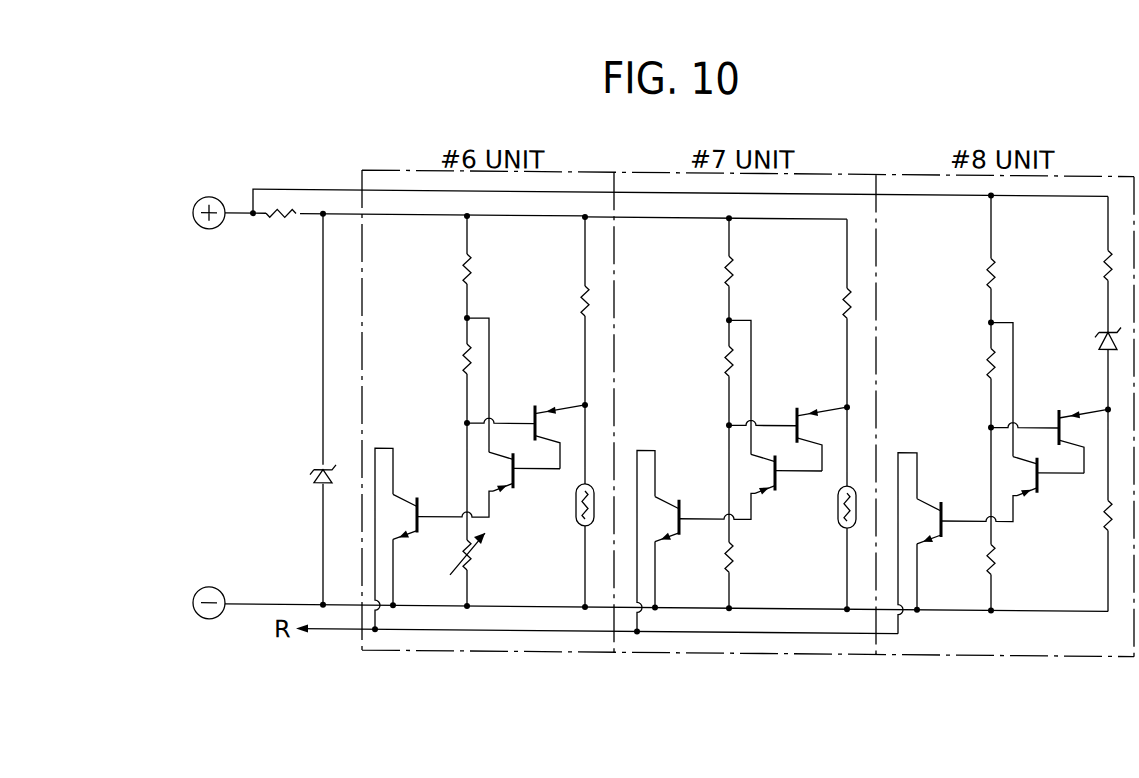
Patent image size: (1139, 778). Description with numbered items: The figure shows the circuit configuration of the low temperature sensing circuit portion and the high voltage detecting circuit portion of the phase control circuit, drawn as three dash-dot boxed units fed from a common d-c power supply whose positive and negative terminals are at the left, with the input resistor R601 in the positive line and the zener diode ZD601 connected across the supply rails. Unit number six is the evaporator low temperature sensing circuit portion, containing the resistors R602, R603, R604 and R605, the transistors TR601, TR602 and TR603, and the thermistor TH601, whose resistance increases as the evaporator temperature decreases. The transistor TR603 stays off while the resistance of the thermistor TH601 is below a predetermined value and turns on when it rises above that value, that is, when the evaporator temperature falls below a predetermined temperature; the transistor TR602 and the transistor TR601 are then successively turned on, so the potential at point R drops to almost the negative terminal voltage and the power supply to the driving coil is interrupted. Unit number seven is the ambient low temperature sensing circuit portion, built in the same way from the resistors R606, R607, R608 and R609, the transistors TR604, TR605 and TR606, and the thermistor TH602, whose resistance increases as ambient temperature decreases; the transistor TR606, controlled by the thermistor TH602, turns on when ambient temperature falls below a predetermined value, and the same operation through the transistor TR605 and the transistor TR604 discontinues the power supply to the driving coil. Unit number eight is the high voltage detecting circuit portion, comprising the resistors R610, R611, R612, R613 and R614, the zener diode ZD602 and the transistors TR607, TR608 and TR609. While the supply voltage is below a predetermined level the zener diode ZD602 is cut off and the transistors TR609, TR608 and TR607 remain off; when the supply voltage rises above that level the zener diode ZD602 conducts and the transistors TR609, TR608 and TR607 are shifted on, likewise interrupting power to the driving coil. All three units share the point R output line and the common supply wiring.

The resistor R601 is at (284, 221).
The zener diode ZD601 is at (315, 470).
The resistor R602 is at (462, 268).
The resistor R603 is at (462, 358).
The resistor R604 is at (473, 558).
The resistor R605 is at (582, 297).
The transistor TR601 is at (403, 499).
The transistor TR602 is at (492, 490).
The transistor TR603 is at (557, 391).
The thermistor TH601 is at (577, 519).
The resistor R606 is at (724, 266).
The resistor R607 is at (724, 356).
The resistor R608 is at (737, 554).
The resistor R609 is at (843, 297).
The transistor TR604 is at (667, 497).
The transistor TR605 is at (757, 487).
The transistor TR606 is at (817, 389).
The thermistor TH602 is at (840, 523).
The resistor R610 is at (986, 264).
The resistor R611 is at (986, 354).
The resistor R612 is at (1001, 546).
The resistor R613 is at (1105, 263).
The resistor R614 is at (1100, 499).
The zener diode ZD602 is at (1100, 334).
The transistor TR607 is at (927, 495).
The transistor TR608 is at (1020, 482).
The transistor TR609 is at (1080, 389).